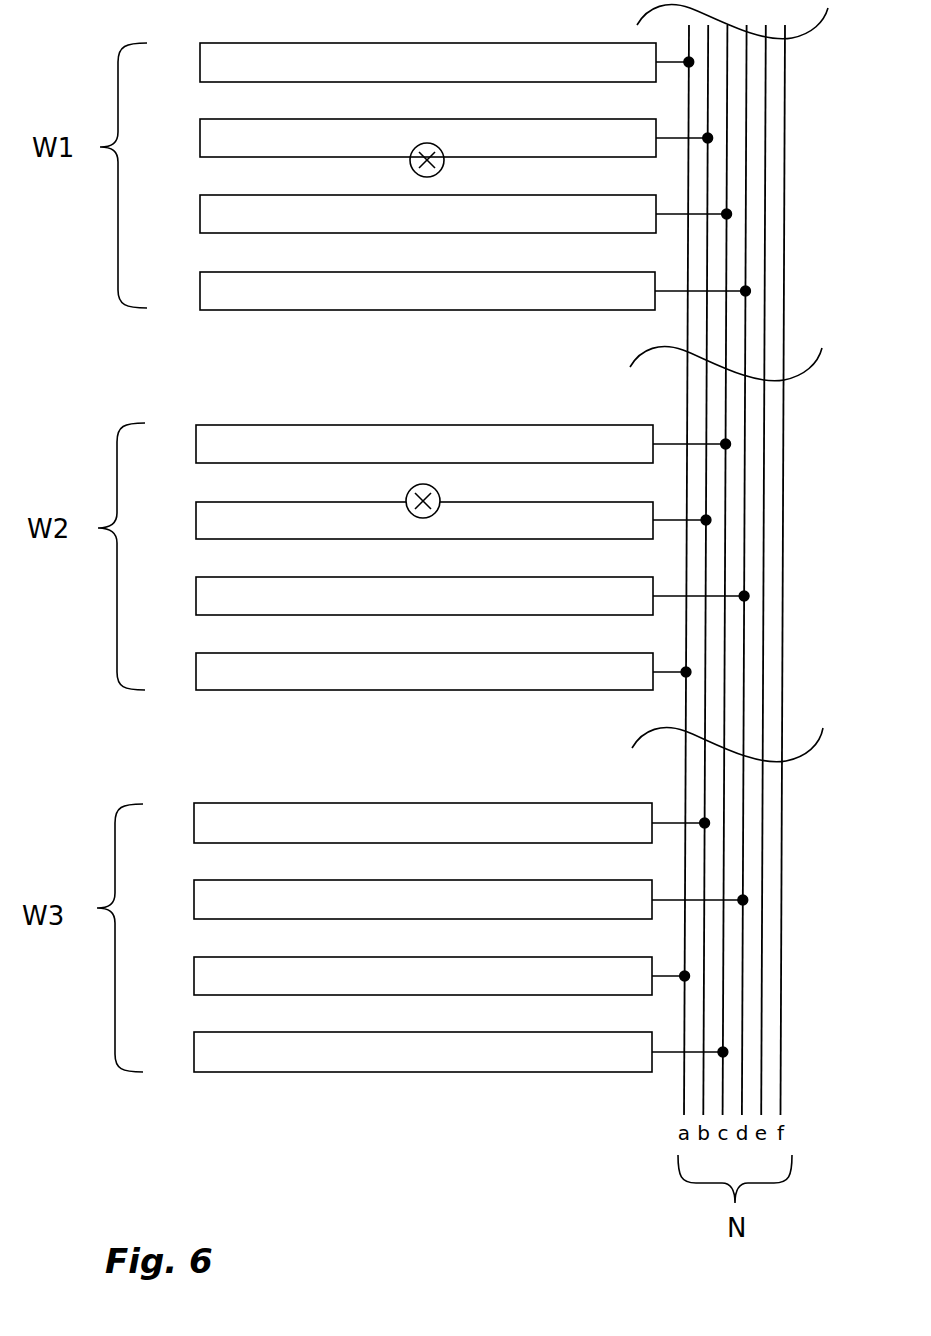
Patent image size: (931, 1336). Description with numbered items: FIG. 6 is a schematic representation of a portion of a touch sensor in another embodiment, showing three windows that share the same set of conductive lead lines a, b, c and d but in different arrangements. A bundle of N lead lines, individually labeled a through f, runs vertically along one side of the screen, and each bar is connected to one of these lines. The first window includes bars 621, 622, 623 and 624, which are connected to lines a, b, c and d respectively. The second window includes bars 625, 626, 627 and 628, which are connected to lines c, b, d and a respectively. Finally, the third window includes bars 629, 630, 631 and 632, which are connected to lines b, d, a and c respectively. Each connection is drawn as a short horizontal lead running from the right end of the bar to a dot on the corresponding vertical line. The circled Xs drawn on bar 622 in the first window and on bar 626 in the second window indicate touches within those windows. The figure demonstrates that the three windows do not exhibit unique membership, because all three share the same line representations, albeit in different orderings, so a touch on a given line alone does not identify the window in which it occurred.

The bar 621 is at (270, 74).
The bar 622 is at (270, 149).
The bar 623 is at (270, 225).
The bar 624 is at (270, 302).
The bar 625 is at (266, 455).
The bar 626 is at (266, 532).
The bar 627 is at (266, 607).
The bar 628 is at (266, 682).
The bar 629 is at (264, 834).
The bar 630 is at (264, 911).
The bar 631 is at (264, 987).
The bar 632 is at (264, 1063).